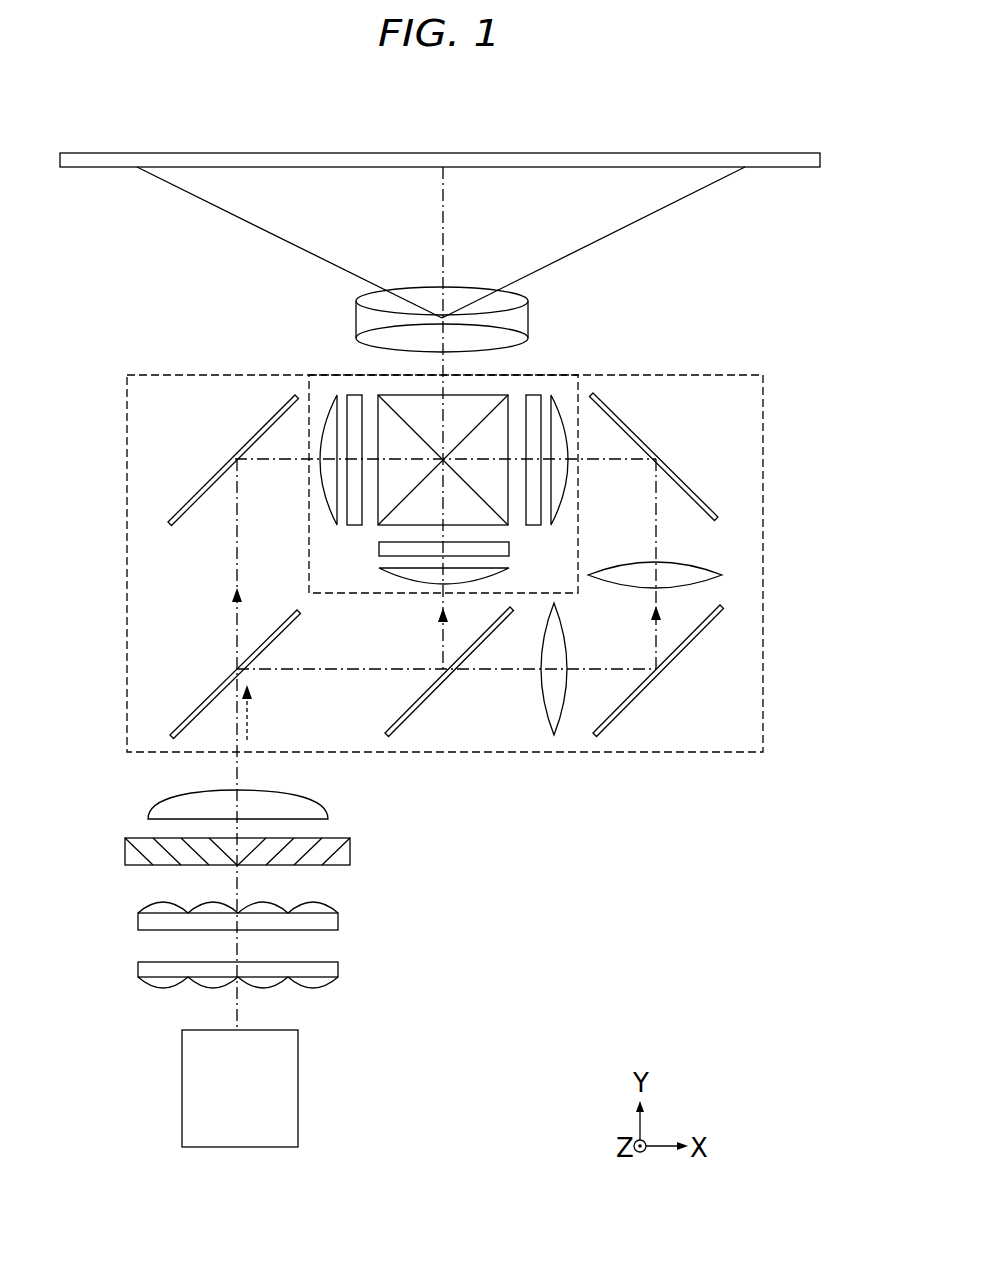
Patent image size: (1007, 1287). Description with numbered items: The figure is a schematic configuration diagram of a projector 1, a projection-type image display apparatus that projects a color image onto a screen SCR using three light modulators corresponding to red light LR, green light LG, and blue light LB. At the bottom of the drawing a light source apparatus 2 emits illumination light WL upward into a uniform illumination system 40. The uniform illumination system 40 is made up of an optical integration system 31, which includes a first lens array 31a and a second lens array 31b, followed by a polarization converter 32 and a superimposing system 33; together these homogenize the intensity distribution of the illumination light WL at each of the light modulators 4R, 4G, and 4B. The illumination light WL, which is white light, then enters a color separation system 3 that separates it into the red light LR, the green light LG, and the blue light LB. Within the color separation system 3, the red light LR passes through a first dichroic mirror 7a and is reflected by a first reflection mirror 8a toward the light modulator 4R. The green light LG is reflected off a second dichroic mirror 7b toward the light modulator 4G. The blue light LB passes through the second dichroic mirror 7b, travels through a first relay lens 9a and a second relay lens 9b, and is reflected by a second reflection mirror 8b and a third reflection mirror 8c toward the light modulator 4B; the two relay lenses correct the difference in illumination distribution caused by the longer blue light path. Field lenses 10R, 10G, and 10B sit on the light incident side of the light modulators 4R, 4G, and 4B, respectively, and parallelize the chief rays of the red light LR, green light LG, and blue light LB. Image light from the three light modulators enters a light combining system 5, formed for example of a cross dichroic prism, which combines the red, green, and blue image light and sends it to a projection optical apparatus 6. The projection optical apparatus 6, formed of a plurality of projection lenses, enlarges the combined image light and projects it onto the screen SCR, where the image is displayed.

The projector 1 is at (784, 240).
The screen SCR is at (780, 158).
The light source apparatus 2 is at (300, 1076).
The color separation system 3 is at (126, 500).
The light modulator 4R is at (352, 394).
The light modulator 4G is at (380, 552).
The light modulator 4B is at (534, 394).
The light combining system 5 is at (462, 407).
The projection optical apparatus 6 is at (425, 298).
The first dichroic mirror 7a is at (207, 703).
The second dichroic mirror 7b is at (423, 700).
The first reflection mirror 8a is at (212, 477).
The second reflection mirror 8b is at (681, 655).
The third reflection mirror 8c is at (682, 477).
The first relay lens 9a is at (542, 687).
The second relay lens 9b is at (680, 563).
The field lens 10R is at (330, 394).
The field lens 10G is at (382, 572).
The field lens 10B is at (560, 394).
The optical integration system 31 is at (305, 950).
The first lens array 31a is at (340, 968).
The second lens array 31b is at (340, 921).
The polarization converter 32 is at (352, 851).
The superimposing system 33 is at (318, 798).
The uniform illumination system 40 is at (327, 894).
The red light LR is at (235, 612).
The green light LG is at (440, 628).
The blue light LB is at (653, 627).
The illumination light WL is at (252, 717).